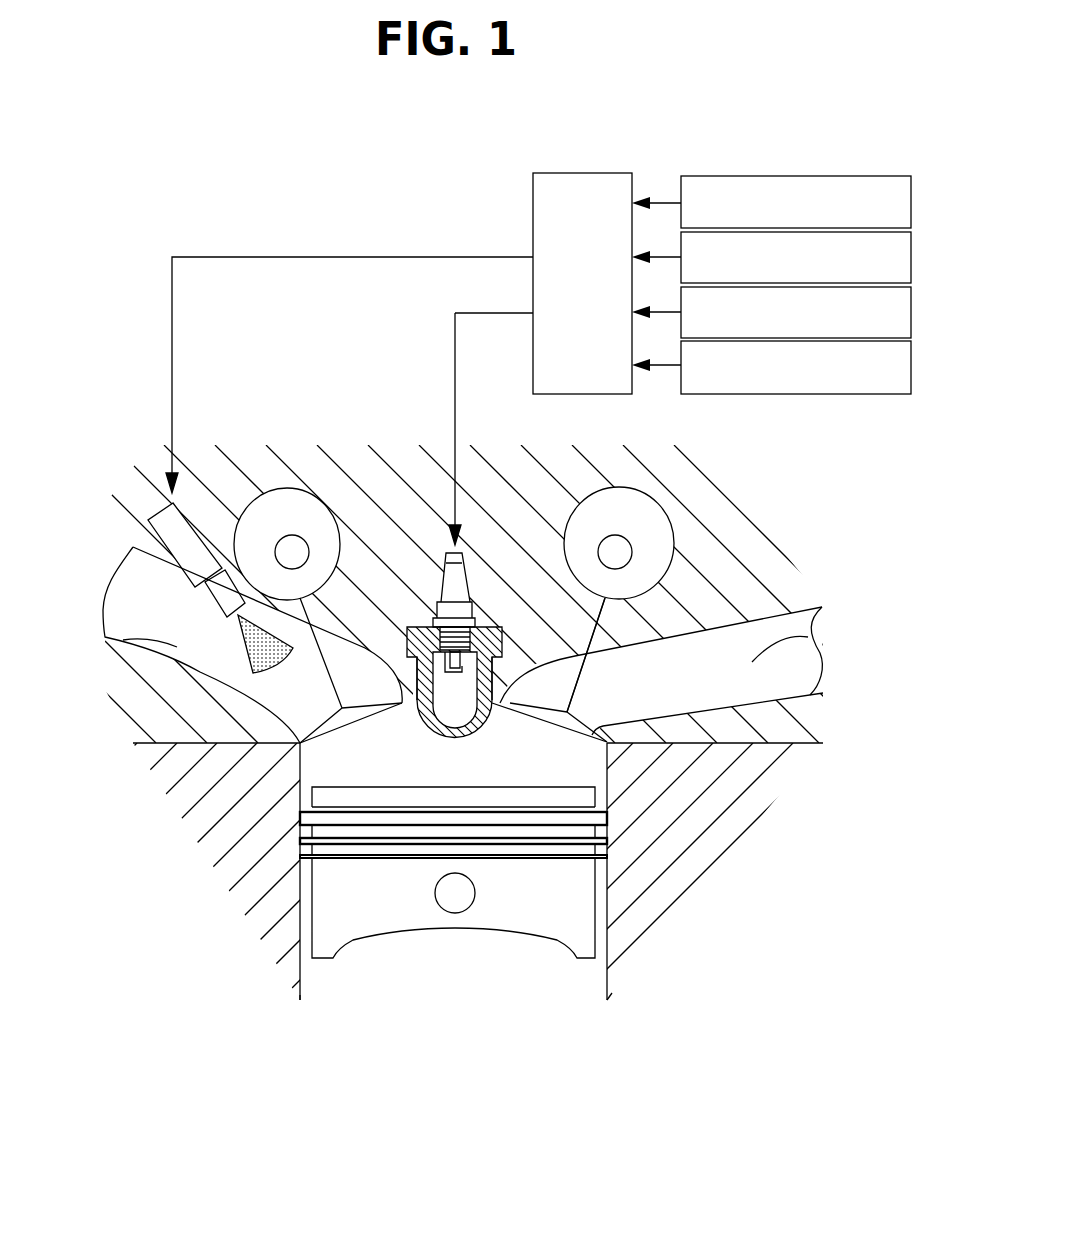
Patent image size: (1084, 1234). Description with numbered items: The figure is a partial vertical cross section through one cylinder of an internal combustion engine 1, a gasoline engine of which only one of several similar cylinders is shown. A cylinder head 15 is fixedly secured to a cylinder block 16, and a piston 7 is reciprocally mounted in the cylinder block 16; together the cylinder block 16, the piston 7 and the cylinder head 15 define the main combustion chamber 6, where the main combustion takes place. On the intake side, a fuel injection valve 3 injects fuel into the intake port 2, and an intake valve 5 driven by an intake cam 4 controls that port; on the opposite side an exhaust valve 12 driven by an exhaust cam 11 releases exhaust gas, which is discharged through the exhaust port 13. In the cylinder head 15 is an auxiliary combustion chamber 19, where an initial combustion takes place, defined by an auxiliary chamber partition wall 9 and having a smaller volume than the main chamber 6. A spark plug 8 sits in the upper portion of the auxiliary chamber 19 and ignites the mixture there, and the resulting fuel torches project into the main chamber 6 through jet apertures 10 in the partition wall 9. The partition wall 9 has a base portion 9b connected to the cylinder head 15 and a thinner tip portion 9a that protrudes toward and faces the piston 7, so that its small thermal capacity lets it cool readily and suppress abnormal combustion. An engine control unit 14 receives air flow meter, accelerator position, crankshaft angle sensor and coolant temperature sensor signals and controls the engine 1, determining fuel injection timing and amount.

The internal combustion engine 1 is at (192, 1043).
The intake port 2 is at (123, 640).
The fuel injection valve 3 is at (160, 510).
The intake cam 4 is at (277, 502).
The intake valve 5 is at (337, 724).
The main combustion chamber 6 is at (547, 763).
The piston 7 is at (340, 798).
The spark plug 8 is at (590, 525).
The auxiliary chamber partition wall 9 is at (452, 742).
The tip portion 9a is at (456, 740).
The base portion 9b is at (417, 697).
The jet apertures 10 is at (425, 722).
The exhaust cam 11 is at (650, 510).
The exhaust valve 12 is at (577, 722).
The exhaust port 13 is at (817, 657).
The engine control unit 14 is at (578, 173).
The cylinder head 15 is at (773, 722).
The cylinder block 16 is at (607, 873).
The auxiliary combustion chamber 19 is at (450, 690).